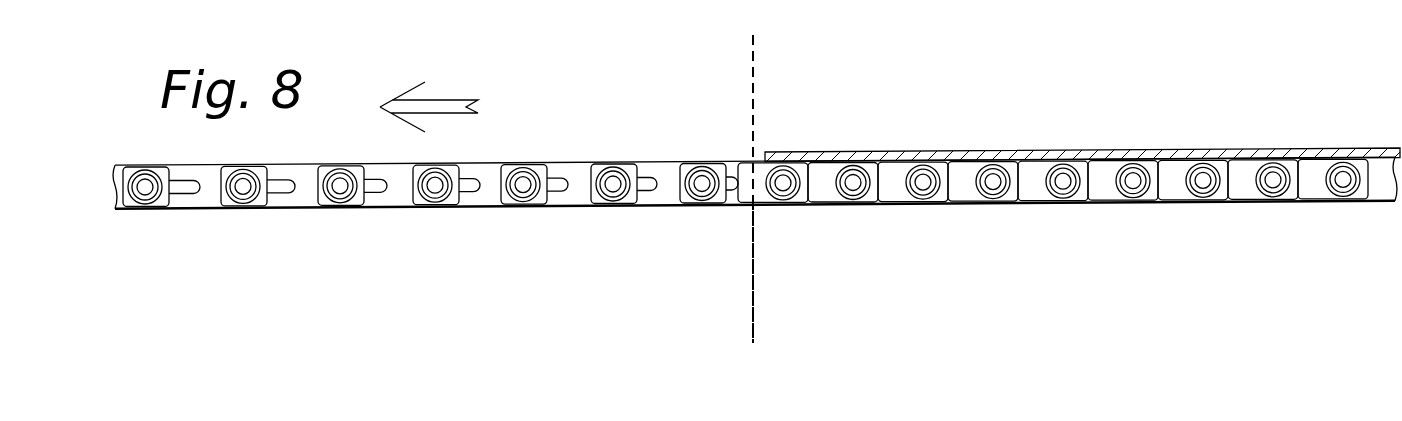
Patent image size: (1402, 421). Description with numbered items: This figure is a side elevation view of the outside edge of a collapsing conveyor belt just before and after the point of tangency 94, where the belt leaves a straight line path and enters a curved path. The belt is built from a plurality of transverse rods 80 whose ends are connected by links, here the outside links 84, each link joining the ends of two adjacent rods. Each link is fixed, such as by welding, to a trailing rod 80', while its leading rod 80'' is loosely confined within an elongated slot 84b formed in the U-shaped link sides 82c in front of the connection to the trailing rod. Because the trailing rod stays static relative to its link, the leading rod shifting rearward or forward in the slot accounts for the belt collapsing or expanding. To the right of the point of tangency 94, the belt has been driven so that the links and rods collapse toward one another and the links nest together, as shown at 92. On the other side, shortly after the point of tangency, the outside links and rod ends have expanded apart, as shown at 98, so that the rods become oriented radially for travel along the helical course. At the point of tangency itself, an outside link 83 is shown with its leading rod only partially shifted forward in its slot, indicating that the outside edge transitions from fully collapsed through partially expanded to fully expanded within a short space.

The transverse rods 80 is at (895, 136).
The trailing rod 80' is at (635, 218).
The leading rod 80'' is at (532, 219).
The U-shaped link sides 82c is at (690, 136).
The outside link 83 is at (743, 162).
The outside links 84 is at (890, 207).
The elongated slots 84b is at (658, 170).
The nested links 92 is at (1036, 207).
The point of tangency 94 is at (758, 250).
The expanded links 98 is at (430, 211).